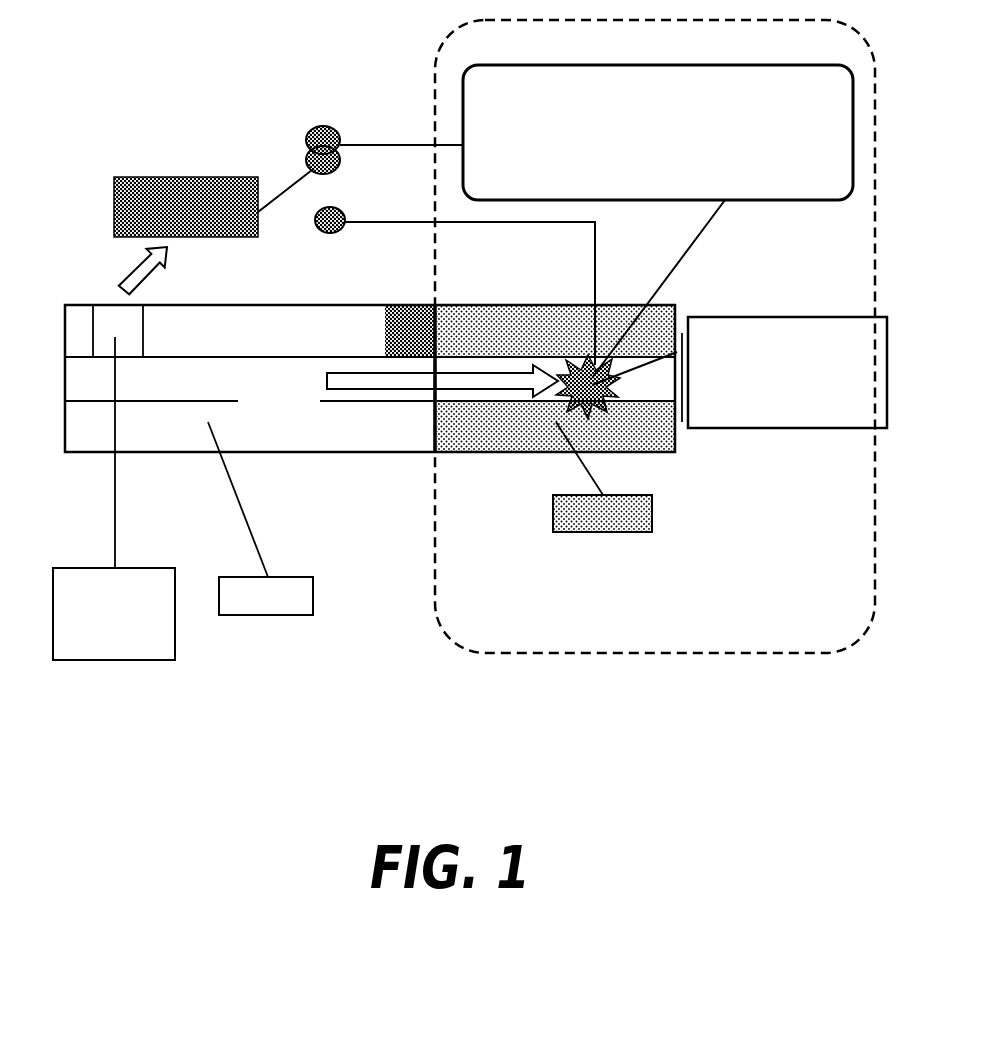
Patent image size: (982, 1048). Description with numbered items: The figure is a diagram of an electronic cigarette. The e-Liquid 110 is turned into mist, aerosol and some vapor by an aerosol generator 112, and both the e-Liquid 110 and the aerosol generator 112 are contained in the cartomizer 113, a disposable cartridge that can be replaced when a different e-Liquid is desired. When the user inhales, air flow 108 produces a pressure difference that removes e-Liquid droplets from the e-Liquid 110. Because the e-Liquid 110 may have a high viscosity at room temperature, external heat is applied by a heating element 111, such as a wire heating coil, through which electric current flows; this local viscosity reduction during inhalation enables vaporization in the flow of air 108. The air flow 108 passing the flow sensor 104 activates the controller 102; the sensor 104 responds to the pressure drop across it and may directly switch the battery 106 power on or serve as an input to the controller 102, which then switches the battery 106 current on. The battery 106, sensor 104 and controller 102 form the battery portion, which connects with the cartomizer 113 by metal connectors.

The controller 102 is at (113, 207).
The flow sensor 104 is at (112, 660).
The battery 106 is at (260, 615).
The air flow 108 is at (365, 389).
The e-Liquid 110 is at (553, 508).
The heating element 111 is at (661, 150).
The aerosol generator 112 is at (805, 428).
The cartomizer 113 is at (558, 653).